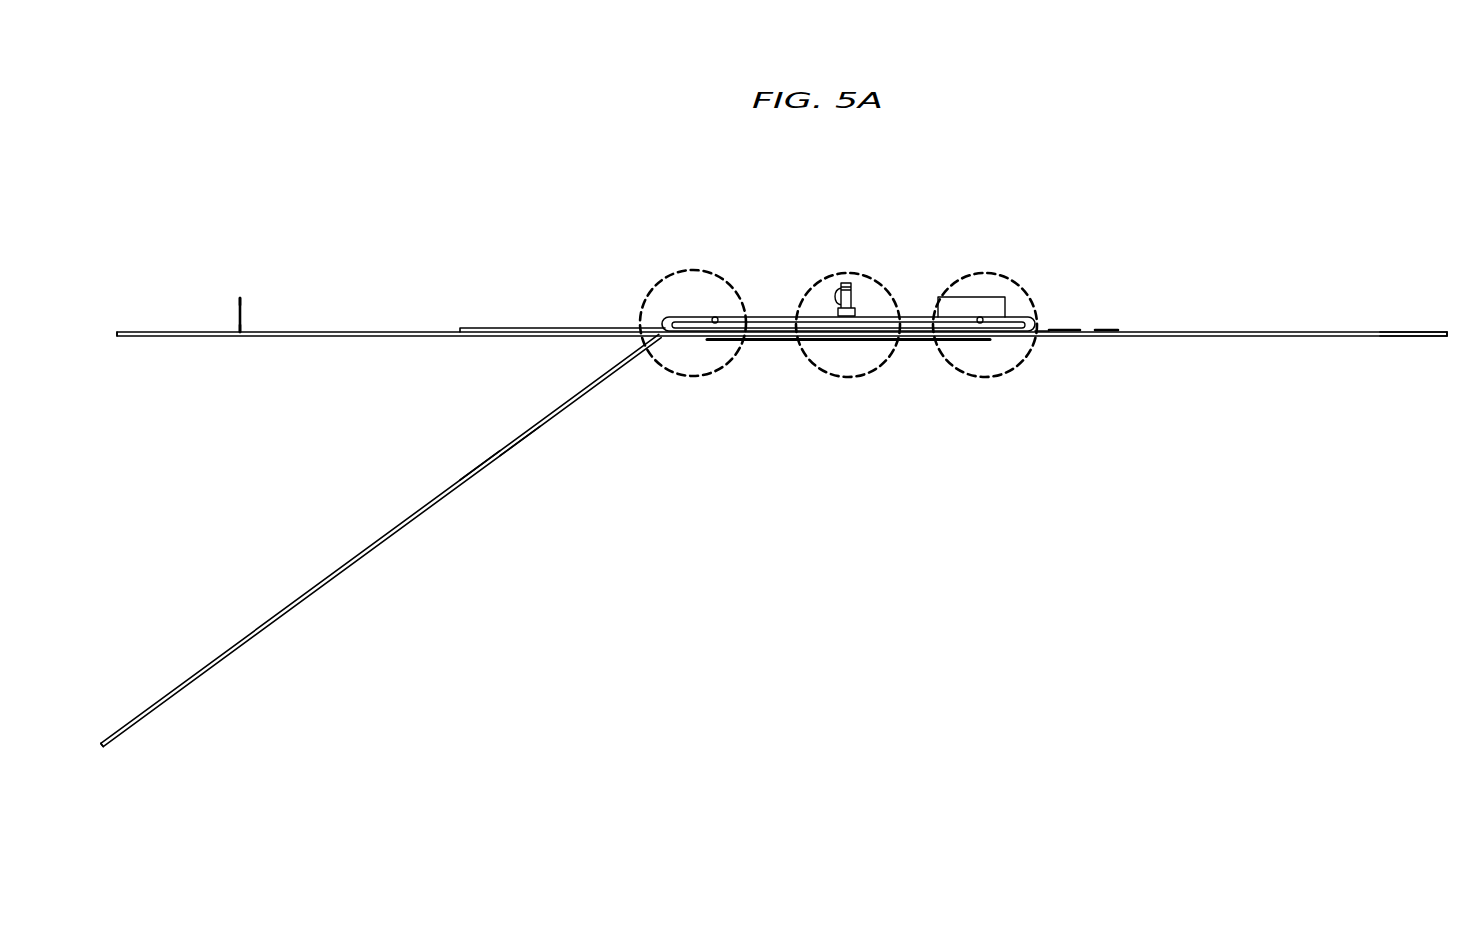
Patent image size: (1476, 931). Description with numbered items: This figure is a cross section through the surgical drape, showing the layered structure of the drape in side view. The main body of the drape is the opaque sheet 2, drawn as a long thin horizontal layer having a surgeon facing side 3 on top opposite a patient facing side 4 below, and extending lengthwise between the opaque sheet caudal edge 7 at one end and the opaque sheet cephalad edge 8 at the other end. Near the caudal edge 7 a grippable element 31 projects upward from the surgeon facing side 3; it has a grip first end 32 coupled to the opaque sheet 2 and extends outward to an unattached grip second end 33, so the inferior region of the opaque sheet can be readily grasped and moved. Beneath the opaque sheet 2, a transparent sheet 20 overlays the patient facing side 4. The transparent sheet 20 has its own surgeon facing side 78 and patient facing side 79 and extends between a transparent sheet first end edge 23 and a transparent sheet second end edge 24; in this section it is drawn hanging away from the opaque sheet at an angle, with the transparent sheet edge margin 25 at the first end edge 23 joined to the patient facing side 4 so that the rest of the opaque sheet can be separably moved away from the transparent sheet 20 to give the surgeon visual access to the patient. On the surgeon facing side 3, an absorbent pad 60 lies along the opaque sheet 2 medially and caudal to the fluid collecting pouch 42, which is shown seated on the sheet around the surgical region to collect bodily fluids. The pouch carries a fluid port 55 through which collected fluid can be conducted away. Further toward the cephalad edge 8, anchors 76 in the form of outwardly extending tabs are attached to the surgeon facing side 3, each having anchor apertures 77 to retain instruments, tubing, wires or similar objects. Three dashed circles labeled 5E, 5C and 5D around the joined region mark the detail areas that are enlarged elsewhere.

The opaque sheet 2 is at (1372, 262).
The surgeon facing side 3 is at (1412, 331).
The patient facing side 4 is at (1390, 337).
The opaque sheet caudal edge 7 is at (117, 337).
The opaque sheet cephalad edge 8 is at (1447, 337).
The transparent sheet 20 is at (412, 540).
The transparent sheet first end edge 23 is at (662, 337).
The transparent sheet second end edge 24 is at (102, 747).
The transparent sheet edge margin 25 is at (668, 338).
The grippable element 31 is at (238, 322).
The grip first end 32 is at (243, 331).
The grip second end 33 is at (243, 300).
The fluid collecting pouch 42 is at (922, 298).
The fluid port 55 is at (869, 281).
The absorbent pad 60 is at (549, 312).
The anchor 76 is at (1122, 329).
The anchor aperture 77 is at (1100, 328).
The transparent sheet surgeon facing side 78 is at (479, 462).
The transparent sheet patient facing side 79 is at (521, 445).
The detail region 5C is at (803, 347).
The detail region 5D is at (1031, 356).
The detail region 5E is at (731, 290).